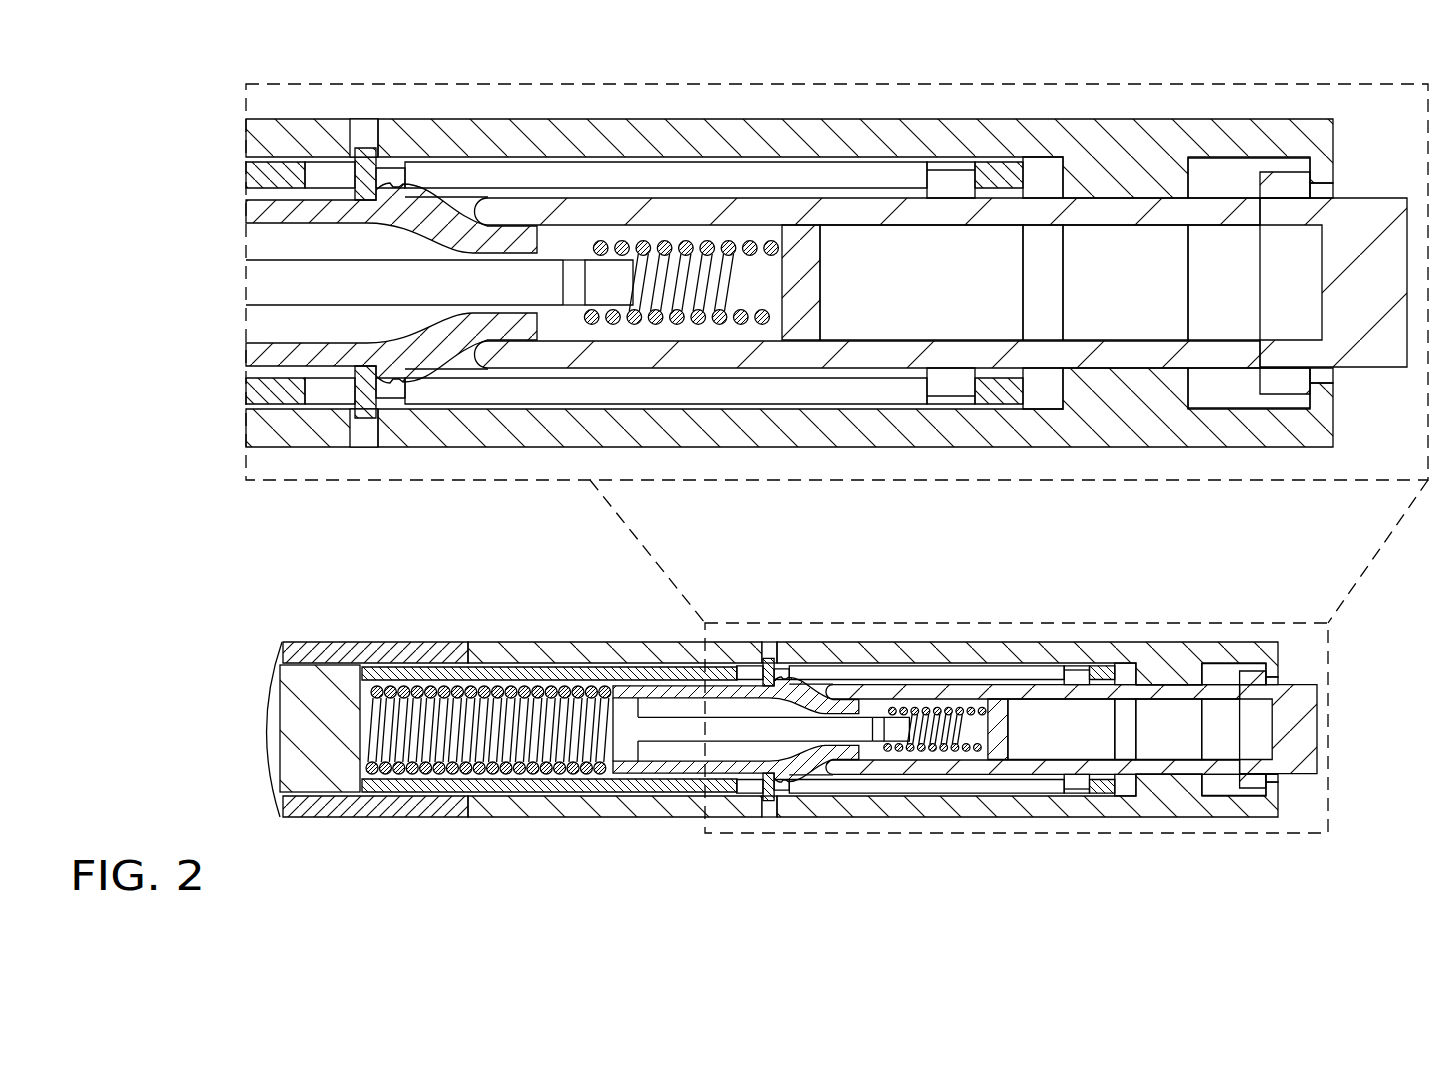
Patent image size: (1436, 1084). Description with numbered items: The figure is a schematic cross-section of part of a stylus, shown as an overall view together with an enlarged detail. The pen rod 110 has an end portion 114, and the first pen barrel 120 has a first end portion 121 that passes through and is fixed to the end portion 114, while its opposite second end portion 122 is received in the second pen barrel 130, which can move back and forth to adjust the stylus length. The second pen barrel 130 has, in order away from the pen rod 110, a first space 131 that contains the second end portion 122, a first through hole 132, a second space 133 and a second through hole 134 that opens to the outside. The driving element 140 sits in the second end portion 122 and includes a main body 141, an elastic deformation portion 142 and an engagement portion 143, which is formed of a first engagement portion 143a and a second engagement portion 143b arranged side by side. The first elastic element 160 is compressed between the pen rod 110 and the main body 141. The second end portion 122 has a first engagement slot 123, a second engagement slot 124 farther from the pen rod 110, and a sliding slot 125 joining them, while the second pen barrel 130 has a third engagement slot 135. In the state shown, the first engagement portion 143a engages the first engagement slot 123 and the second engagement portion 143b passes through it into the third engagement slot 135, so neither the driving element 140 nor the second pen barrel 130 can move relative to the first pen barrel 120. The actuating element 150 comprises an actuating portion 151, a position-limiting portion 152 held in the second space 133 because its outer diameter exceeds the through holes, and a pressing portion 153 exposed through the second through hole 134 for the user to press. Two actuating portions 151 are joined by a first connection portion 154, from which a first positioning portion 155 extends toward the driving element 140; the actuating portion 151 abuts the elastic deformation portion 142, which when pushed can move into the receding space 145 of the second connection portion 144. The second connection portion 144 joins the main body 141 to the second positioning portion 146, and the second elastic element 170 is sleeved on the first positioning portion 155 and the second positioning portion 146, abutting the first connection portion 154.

The pen rod 110 is at (246, 728).
The end portion 114 is at (410, 805).
The first pen barrel 120 is at (530, 674).
The first end portion 121 is at (427, 675).
The second end portion 122 is at (686, 670).
The first engagement slot 123 is at (393, 158).
The second engagement slot 124 is at (948, 158).
The sliding slot 125 is at (675, 177).
The second pen barrel 130 is at (1183, 658).
The first space 131 is at (1045, 180).
The first through hole 132 is at (1127, 190).
The second space 133 is at (1208, 157).
The second through hole 134 is at (1318, 180).
The third engagement slot 135 is at (347, 138).
The driving element 140 is at (818, 680).
The main body 141 is at (622, 730).
The elastic deformation portion 142 is at (440, 213).
The engagement portion 143 is at (234, 283).
The first engagement portion 143a is at (370, 215).
The second engagement portion 143b is at (368, 175).
The second connection portion 144 is at (275, 281).
The receding space 145 is at (548, 282).
The second positioning portion 146 is at (608, 290).
The actuating element 150 is at (1299, 664).
The actuating portion 151 is at (510, 208).
The position-limiting portion 152 is at (1278, 183).
The pressing portion 153 is at (1372, 232).
The first connection portion 154 is at (802, 283).
The first positioning portion 155 is at (755, 283).
The first elastic element 160 is at (385, 690).
The second elastic element 170 is at (730, 246).